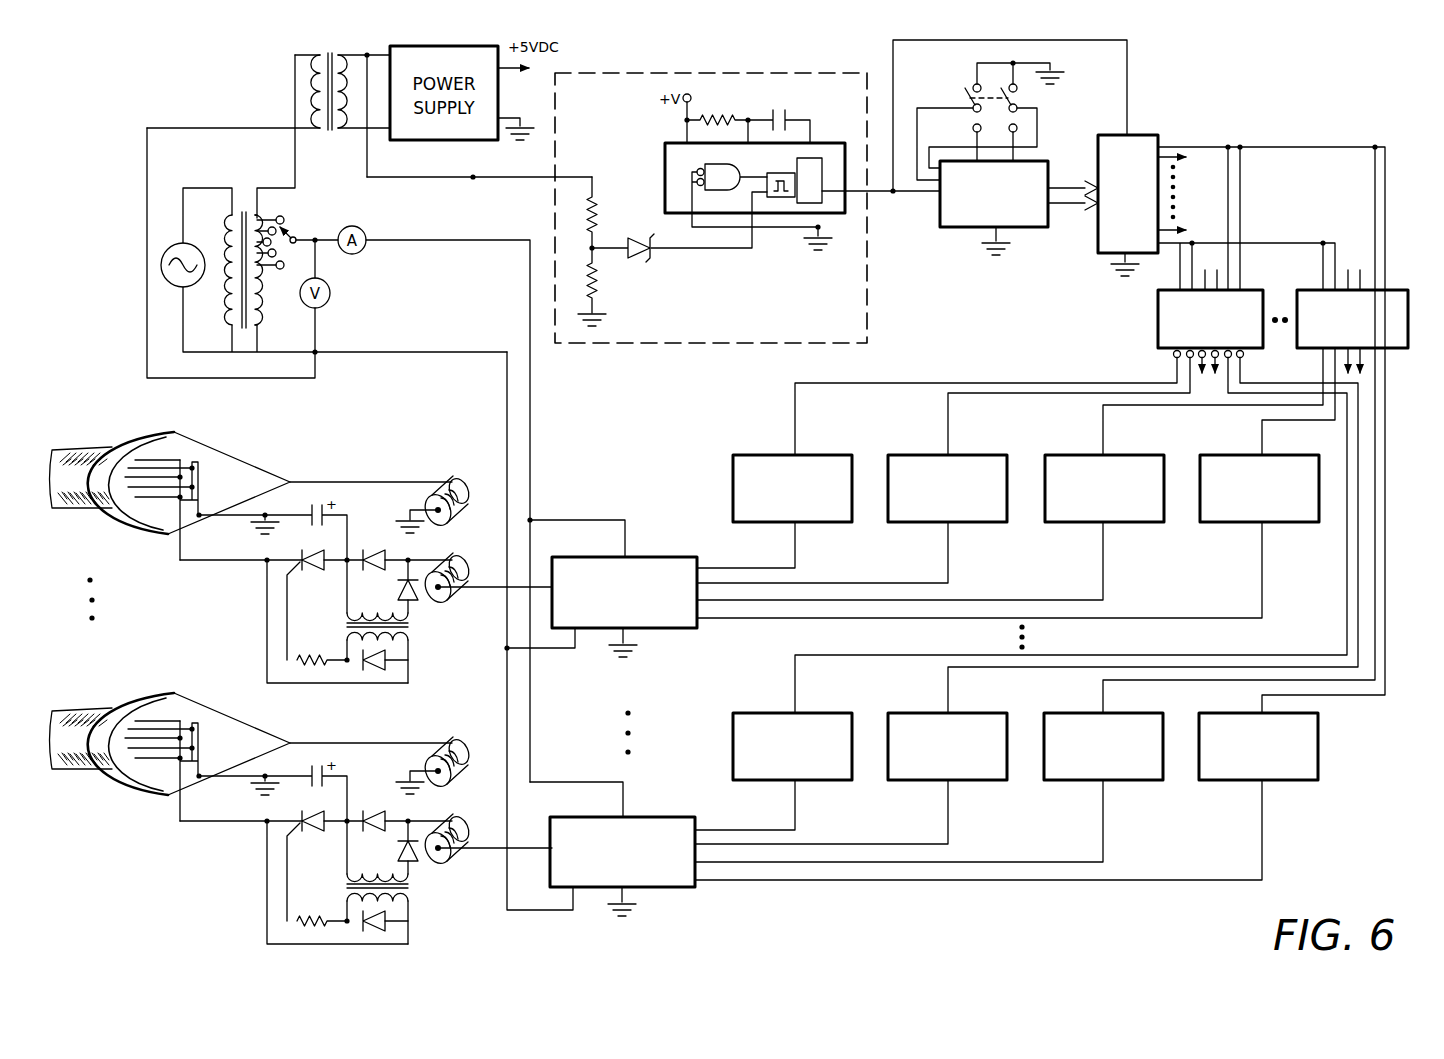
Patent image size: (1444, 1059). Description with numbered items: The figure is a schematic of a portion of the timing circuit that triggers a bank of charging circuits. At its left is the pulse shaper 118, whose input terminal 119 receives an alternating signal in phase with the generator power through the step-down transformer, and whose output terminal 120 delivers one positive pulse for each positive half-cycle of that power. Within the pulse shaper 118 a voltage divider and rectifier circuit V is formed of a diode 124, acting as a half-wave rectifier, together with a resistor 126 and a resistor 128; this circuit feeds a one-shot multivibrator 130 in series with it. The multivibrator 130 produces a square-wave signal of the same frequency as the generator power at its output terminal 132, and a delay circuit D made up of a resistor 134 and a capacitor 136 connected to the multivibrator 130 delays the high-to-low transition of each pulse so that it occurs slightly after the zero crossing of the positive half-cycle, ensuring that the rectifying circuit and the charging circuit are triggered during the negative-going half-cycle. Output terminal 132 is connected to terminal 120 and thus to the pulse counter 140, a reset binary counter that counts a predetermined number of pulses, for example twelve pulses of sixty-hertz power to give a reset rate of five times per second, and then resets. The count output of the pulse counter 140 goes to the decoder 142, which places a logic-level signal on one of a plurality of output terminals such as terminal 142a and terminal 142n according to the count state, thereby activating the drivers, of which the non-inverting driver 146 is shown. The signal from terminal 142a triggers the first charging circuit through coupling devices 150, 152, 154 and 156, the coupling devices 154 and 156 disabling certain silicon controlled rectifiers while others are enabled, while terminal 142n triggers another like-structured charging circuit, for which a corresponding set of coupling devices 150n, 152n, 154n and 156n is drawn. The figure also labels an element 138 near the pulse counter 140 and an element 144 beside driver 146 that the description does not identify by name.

The pulse shaper 118 is at (670, 71).
The input terminal 119 is at (472, 180).
The output terminal 120 is at (893, 197).
The diode 124 is at (652, 241).
The resistor 126 is at (596, 224).
The resistor 128 is at (596, 286).
The one shot multivibrator 130 is at (665, 160).
The output terminal 132 is at (846, 198).
The resistor 134 is at (728, 117).
The capacitor 136 is at (788, 117).
The switch 138 is at (965, 92).
The pulse counter 140 is at (940, 228).
The decoder 142 is at (1138, 134).
The output terminal 142a is at (1205, 242).
The output terminal 142n is at (1189, 146).
The inverter driver 144 is at (1158, 320).
The driver 146 is at (1401, 290).
The coupling device 150 is at (1228, 455).
The opto-coupler 150n is at (1228, 713).
The coupling device 152 is at (1070, 455).
The opto-coupler 152n is at (1075, 713).
The coupling device 154 is at (915, 455).
The opto-coupler 154n is at (922, 713).
The coupling device 156 is at (750, 455).
The opto-coupler 156n is at (755, 713).